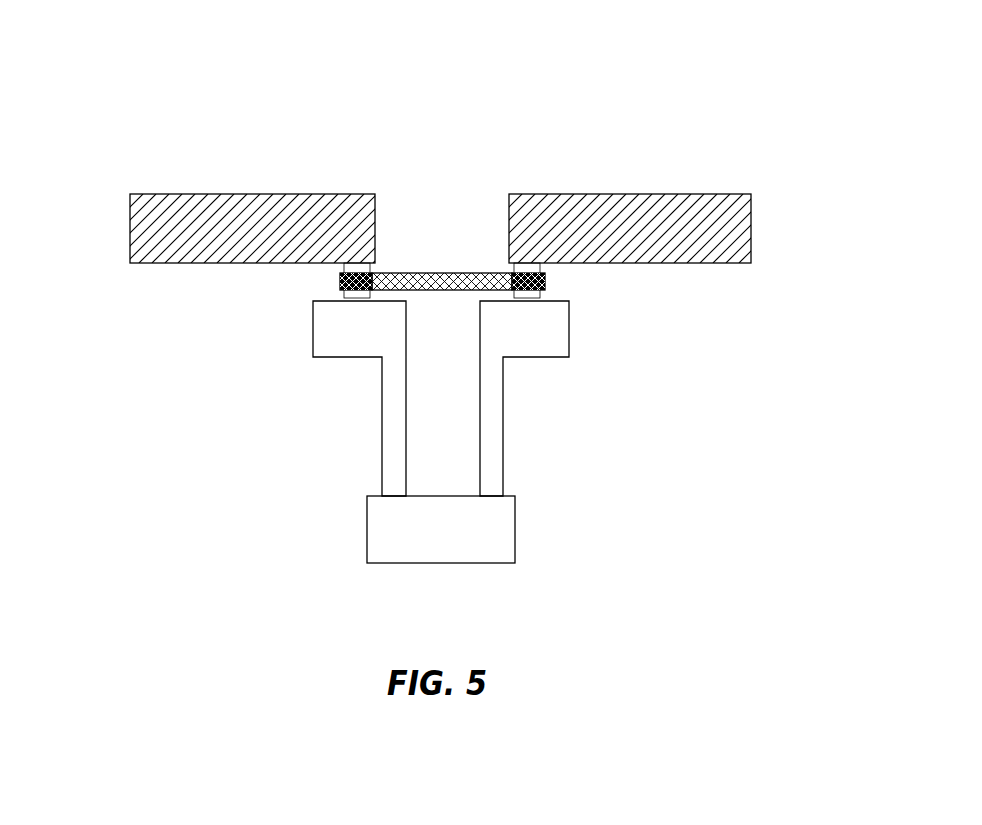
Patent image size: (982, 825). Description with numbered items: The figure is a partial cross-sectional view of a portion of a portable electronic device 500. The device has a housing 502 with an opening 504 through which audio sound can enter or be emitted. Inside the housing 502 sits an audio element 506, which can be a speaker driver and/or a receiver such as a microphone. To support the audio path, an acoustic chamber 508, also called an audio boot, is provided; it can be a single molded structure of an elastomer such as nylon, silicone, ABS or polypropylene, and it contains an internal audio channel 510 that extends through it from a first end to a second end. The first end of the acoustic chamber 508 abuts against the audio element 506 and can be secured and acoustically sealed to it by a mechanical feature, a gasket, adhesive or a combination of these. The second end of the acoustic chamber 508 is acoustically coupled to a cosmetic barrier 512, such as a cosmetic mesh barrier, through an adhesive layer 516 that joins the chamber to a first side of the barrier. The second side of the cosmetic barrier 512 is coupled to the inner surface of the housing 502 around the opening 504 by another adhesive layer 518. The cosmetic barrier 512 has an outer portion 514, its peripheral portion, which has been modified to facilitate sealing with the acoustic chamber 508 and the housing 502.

The portable electronic device 500 is at (647, 107).
The housing 502 is at (128, 233).
The opening 504 is at (438, 203).
The audio element 506 is at (441, 529).
The acoustic chamber 508 is at (313, 344).
The internal audio channel 510 is at (443, 449).
The cosmetic barrier 512 is at (455, 270).
The outer portion 514 is at (338, 288).
The adhesive layer 516 is at (511, 293).
The adhesive layer 518 is at (345, 269).